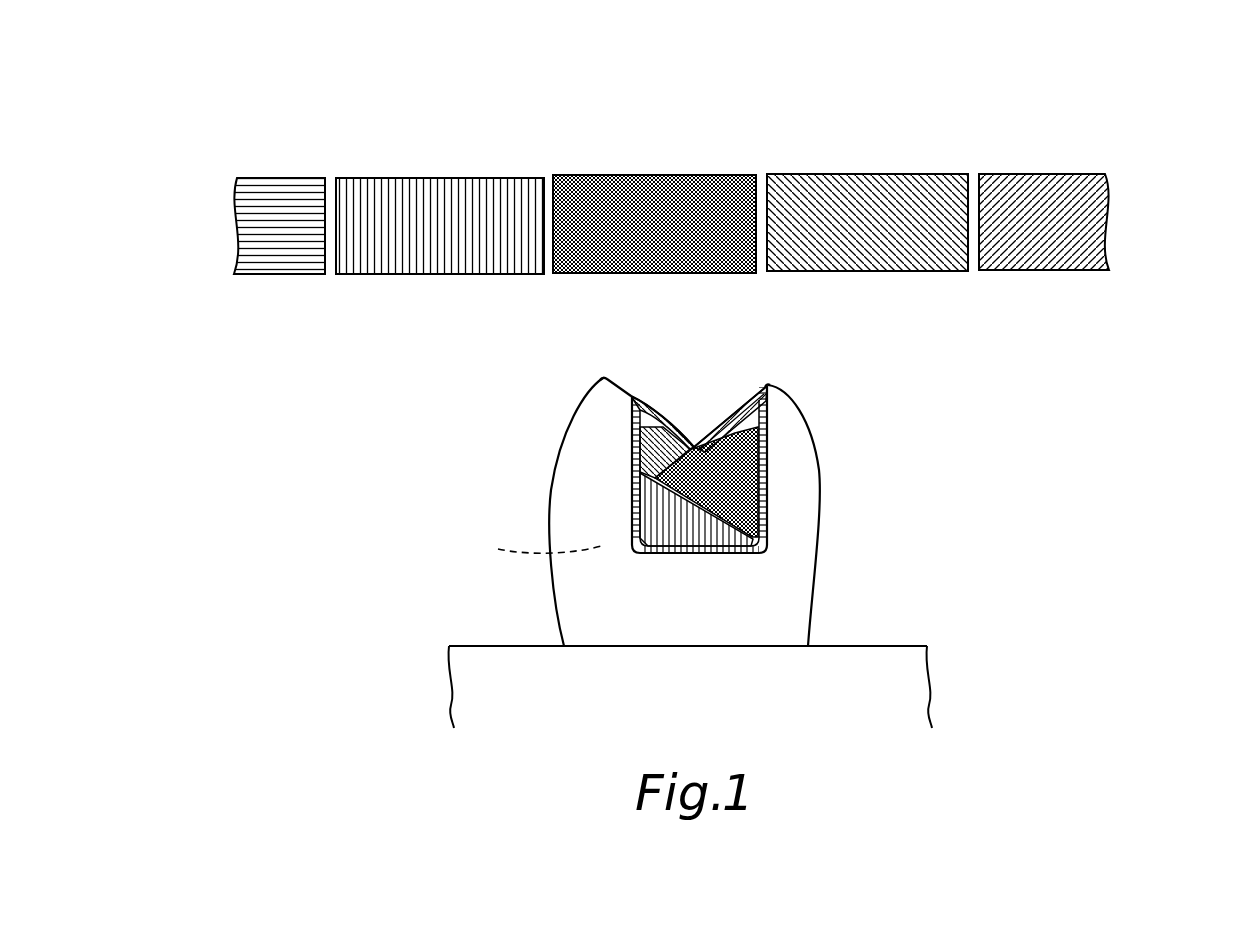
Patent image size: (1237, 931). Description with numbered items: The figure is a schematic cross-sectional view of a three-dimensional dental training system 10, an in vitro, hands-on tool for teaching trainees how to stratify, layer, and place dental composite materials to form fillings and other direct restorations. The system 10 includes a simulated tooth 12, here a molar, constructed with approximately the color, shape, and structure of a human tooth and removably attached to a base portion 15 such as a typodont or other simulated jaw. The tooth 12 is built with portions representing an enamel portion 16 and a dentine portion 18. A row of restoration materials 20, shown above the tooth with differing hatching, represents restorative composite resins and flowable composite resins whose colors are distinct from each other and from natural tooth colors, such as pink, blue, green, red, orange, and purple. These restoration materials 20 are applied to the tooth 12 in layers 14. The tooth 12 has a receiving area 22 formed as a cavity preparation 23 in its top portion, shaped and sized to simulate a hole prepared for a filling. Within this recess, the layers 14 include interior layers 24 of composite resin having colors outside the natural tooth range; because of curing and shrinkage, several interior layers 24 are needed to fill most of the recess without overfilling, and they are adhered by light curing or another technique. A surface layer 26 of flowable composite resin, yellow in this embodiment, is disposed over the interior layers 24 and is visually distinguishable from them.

The three-dimensional dental training system 10 is at (1141, 84).
The simulated tooth 12 is at (884, 391).
The layers 14 is at (737, 395).
The base portion 15 is at (875, 650).
The enamel portion 16 is at (582, 493).
The dentine portion 18 is at (538, 551).
The restoration materials 20 is at (280, 197).
The receiving area 22 is at (768, 503).
The cavity preparation 23 is at (770, 467).
The interior layers 24 is at (637, 457).
The surface layer 26 is at (668, 417).